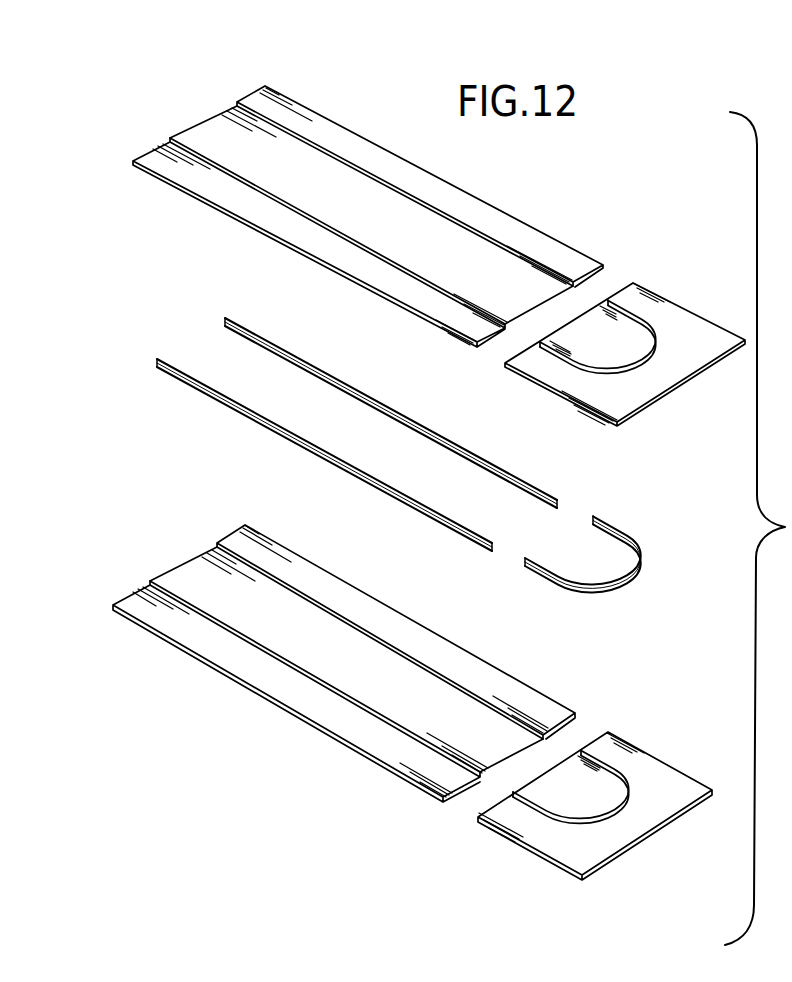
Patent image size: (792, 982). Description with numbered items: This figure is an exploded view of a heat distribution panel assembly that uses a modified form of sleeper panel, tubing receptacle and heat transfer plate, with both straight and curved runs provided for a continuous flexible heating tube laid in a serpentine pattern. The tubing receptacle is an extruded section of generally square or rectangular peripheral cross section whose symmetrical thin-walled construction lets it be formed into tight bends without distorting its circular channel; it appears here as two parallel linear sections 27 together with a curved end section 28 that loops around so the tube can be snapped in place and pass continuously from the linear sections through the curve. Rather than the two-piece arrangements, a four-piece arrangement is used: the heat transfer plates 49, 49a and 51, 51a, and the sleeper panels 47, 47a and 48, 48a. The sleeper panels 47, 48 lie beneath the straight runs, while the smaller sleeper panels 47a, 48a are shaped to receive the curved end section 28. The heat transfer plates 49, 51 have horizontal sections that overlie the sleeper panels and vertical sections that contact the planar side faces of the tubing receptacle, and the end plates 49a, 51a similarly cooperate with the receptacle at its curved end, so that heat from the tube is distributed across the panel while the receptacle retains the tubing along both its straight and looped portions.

The parallel linear sections 27 is at (359, 467).
The curved end section 28 is at (642, 570).
The sleeper panel 47 is at (423, 632).
The sleeper panel 47a is at (662, 778).
The sleeper panel 48 is at (348, 635).
The sleeper panel 48a is at (590, 780).
The heat transfer plate 49 is at (525, 233).
The heat transfer plate 49a is at (670, 313).
The heat transfer plate 51 is at (447, 232).
The heat transfer plate 51a is at (615, 327).